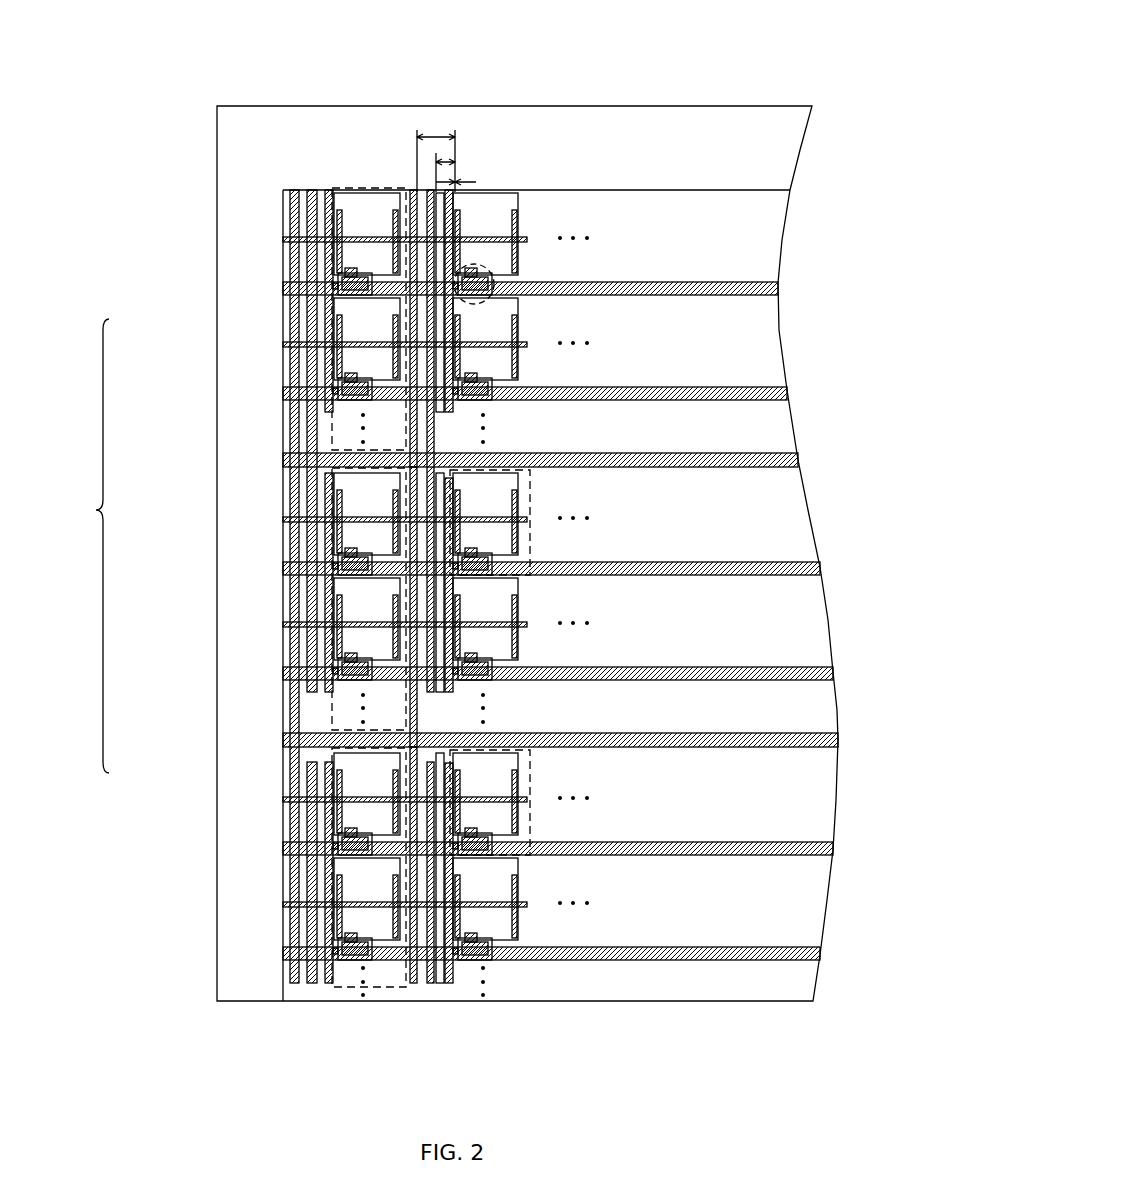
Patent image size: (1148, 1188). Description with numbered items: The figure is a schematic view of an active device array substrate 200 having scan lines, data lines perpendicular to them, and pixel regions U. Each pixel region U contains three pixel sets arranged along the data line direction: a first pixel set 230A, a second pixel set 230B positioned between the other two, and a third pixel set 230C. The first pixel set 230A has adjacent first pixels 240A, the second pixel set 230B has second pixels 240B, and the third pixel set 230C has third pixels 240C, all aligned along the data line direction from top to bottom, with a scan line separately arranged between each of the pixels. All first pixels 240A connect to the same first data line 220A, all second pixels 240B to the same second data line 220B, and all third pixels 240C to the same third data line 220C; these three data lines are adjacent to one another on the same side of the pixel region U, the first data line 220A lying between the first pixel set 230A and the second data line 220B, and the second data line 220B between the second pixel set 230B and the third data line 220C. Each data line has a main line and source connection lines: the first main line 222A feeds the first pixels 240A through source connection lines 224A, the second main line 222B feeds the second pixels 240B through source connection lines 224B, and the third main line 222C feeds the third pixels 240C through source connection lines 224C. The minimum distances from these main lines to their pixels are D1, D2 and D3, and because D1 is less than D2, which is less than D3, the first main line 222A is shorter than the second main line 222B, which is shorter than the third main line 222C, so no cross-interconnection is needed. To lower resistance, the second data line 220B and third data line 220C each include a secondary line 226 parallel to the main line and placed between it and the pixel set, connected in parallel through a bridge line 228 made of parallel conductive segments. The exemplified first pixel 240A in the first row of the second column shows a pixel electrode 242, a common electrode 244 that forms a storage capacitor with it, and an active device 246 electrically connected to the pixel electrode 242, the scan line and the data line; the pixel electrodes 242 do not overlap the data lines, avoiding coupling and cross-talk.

The active device array substrate 200 is at (865, 1063).
The first data line 220A is at (330, 190).
The second data line 220B is at (313, 190).
The third data line 220C is at (295, 190).
The first main line 222A is at (418, 462).
The second main line 222B is at (440, 752).
The third main line 222C is at (413, 985).
The source connection lines of the first data line 224A is at (490, 291).
The source connection lines of the second data line 224B is at (490, 571).
The source connection lines of the third data line 224C is at (490, 851).
The secondary line 226 is at (453, 990).
The bridge line 228 is at (450, 412).
The first pixel set 230A is at (293, 325).
The second pixel set 230B is at (293, 590).
The third pixel set 230C is at (293, 765).
The first pixel 240A is at (493, 222).
The second pixel 240B is at (358, 502).
The third pixel 240C is at (358, 888).
The pixel electrode 242 is at (495, 203).
The common electrode 244 is at (502, 228).
The active device 246 is at (494, 272).
The pixel region U is at (90, 546).
The minimum distance from the first main line to the first pixel D1 is at (467, 182).
The minimum distance from the second main line to the second pixel D2 is at (458, 171).
The minimum distance from the third main line to the third pixel D3 is at (449, 158).